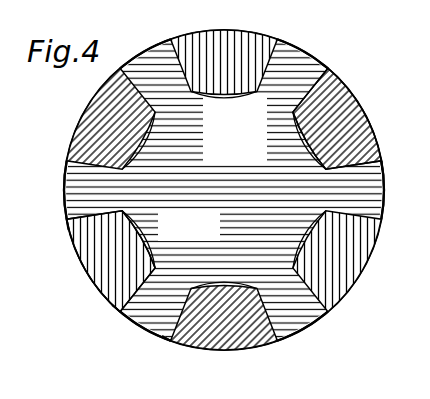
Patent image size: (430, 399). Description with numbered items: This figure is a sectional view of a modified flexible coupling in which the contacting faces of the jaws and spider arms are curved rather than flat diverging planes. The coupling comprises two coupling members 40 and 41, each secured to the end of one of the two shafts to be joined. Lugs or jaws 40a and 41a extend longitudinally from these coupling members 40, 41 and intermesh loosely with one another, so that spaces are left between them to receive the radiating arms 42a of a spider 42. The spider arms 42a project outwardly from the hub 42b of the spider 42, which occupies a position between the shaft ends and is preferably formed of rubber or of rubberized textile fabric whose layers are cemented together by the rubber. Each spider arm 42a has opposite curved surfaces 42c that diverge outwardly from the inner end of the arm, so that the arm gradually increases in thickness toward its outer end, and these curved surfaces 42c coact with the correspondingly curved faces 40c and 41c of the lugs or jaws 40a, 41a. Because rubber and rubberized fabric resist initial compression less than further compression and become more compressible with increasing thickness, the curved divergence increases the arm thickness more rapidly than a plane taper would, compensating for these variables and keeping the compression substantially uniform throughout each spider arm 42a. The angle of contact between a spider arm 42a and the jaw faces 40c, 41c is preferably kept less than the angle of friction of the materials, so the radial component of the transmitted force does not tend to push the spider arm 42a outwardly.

The coupling member 40 is at (78, 262).
The lug or jaw 40a is at (213, 42).
The curved face 40c is at (68, 214).
The coupling member 41 is at (368, 95).
The lug or jaw 41a is at (110, 105).
The curved face 41c is at (384, 59).
The spider 42 is at (224, 190).
The spider arm 42a is at (155, 63).
The hub 42b is at (189, 226).
The curved surface 42c is at (328, 308).